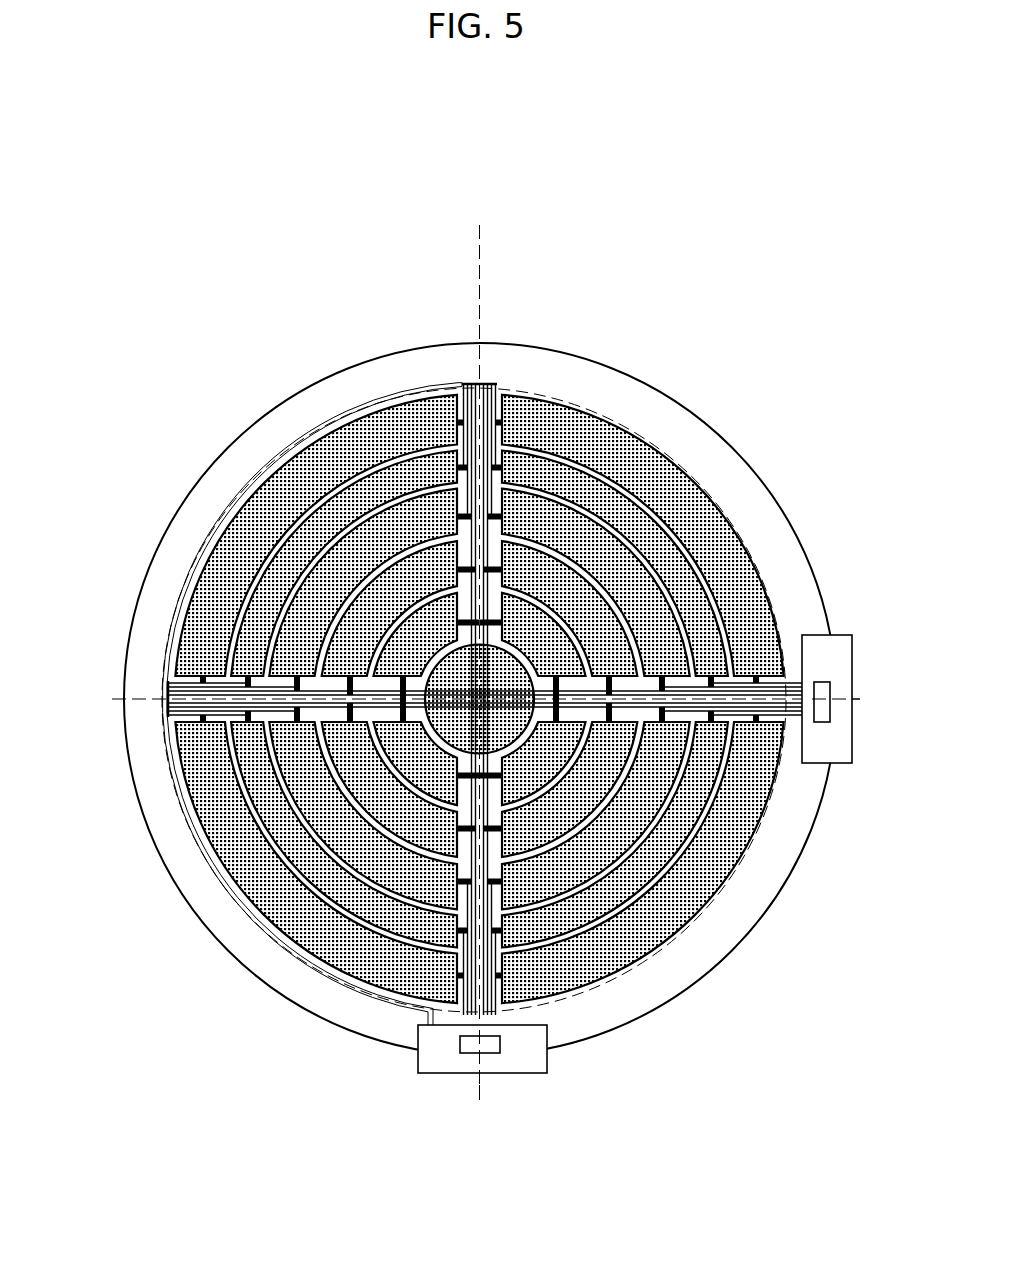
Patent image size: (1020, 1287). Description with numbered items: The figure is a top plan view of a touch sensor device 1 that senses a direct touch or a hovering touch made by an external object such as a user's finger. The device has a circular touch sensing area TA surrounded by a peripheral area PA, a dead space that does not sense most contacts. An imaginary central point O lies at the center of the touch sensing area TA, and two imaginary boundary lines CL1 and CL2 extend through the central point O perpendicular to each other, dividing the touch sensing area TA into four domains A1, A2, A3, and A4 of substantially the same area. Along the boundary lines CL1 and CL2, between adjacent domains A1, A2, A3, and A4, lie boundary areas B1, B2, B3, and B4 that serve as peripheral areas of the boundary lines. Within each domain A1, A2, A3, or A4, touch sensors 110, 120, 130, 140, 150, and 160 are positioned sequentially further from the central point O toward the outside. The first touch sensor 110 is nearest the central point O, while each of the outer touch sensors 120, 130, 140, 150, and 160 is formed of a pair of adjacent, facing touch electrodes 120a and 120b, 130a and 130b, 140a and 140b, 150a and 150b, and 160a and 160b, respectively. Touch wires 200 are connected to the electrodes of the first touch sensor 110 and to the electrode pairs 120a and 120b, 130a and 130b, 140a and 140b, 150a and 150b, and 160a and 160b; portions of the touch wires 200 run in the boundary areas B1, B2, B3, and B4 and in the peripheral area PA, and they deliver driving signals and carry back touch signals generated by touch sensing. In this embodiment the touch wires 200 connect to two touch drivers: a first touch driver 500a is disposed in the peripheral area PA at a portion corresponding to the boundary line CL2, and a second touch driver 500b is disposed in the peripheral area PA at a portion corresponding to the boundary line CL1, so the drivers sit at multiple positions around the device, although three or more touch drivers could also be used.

The touch sensor device 1 is at (745, 378).
The first touch sensor 110 is at (592, 462).
The touch sensor 120 is at (470, 252).
The touch electrode 120a is at (420, 640).
The touch electrode 120b is at (433, 628).
The touch sensor 130 is at (317, 198).
The touch electrode 130a is at (403, 607).
The touch electrode 130b is at (427, 623).
The touch sensor 140 is at (200, 267).
The touch electrode 140a is at (340, 560).
The touch electrode 140b is at (373, 580).
The touch sensor 150 is at (153, 345).
The touch electrode 150a is at (290, 550).
The touch electrode 150b is at (307, 548).
The touch sensor 160 is at (138, 445).
The touch electrode 160a is at (220, 577).
The touch electrode 160b is at (258, 563).
The touch wire 200 is at (462, 383).
The first touch driver 500a is at (513, 1073).
The second touch driver 500b is at (846, 763).
The domain A1 is at (620, 560).
The domain A2 is at (340, 560).
The domain A3 is at (340, 839).
The domain A4 is at (620, 839).
The boundary area B1 is at (795, 678).
The boundary area B2 is at (500, 376).
The boundary area B3 is at (163, 676).
The boundary area B4 is at (510, 1012).
The imaginary boundary line CL1 is at (464, 702).
The imaginary boundary line CL2 is at (481, 646).
The central point O is at (479, 699).
The peripheral area PA is at (248, 958).
The touch sensing area TA is at (302, 975).